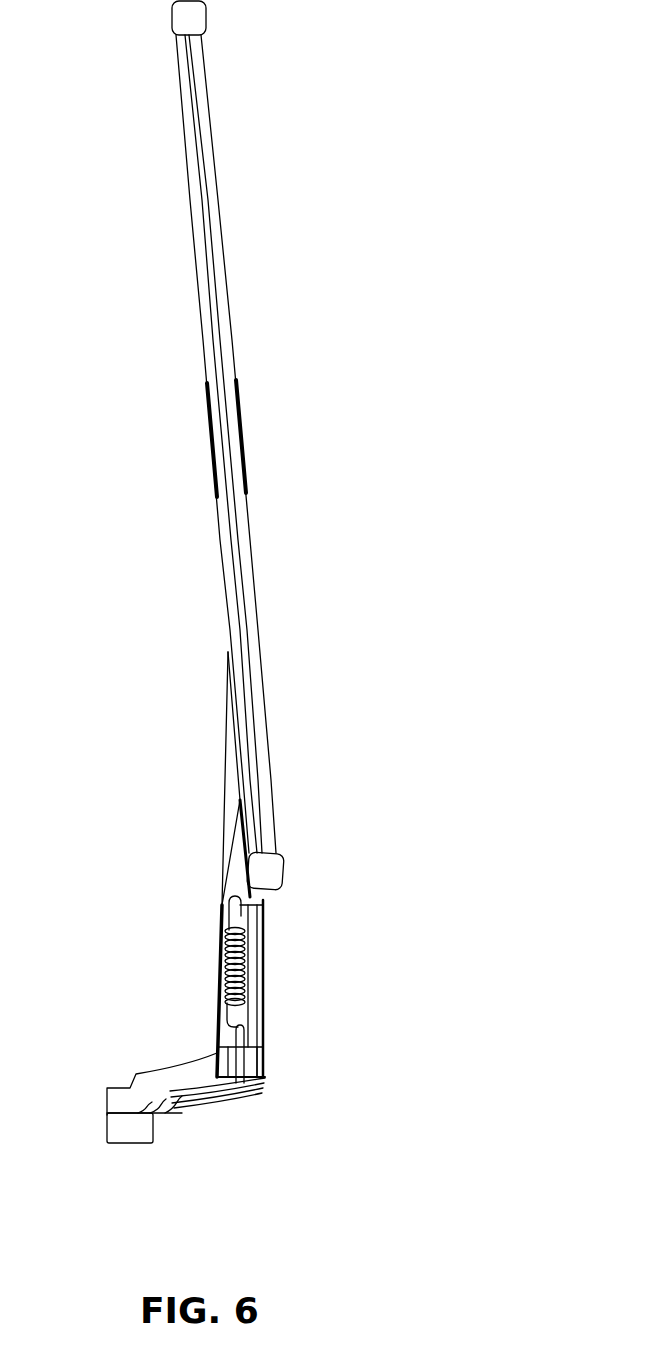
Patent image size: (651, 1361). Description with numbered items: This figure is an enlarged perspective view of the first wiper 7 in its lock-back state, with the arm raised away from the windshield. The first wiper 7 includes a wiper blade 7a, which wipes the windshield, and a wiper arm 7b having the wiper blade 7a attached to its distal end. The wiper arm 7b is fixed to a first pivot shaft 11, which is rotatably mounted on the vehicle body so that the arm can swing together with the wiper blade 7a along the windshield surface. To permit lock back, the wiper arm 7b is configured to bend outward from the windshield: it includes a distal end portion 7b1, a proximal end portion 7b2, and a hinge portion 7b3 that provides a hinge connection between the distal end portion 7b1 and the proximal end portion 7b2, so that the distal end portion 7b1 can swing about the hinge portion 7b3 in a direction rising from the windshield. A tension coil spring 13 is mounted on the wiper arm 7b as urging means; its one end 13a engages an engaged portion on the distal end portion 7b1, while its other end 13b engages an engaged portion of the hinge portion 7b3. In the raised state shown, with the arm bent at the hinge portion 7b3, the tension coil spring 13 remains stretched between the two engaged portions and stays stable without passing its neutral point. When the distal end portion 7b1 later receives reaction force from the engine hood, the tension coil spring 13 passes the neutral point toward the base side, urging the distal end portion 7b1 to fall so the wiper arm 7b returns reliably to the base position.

The first wiper 7 is at (158, 583).
The wiper blade 7a is at (250, 555).
The wiper arm 7b is at (281, 1002).
The distal end portion 7b1 is at (260, 955).
The proximal end portion 7b2 is at (207, 1100).
The hinge portion 7b3 is at (217, 1057).
The first pivot shaft 11 is at (117, 1132).
The tension coil spring 13 is at (243, 965).
The one end of the tension coil spring 13a is at (235, 920).
The other end of the tension coil spring 13b is at (261, 1058).